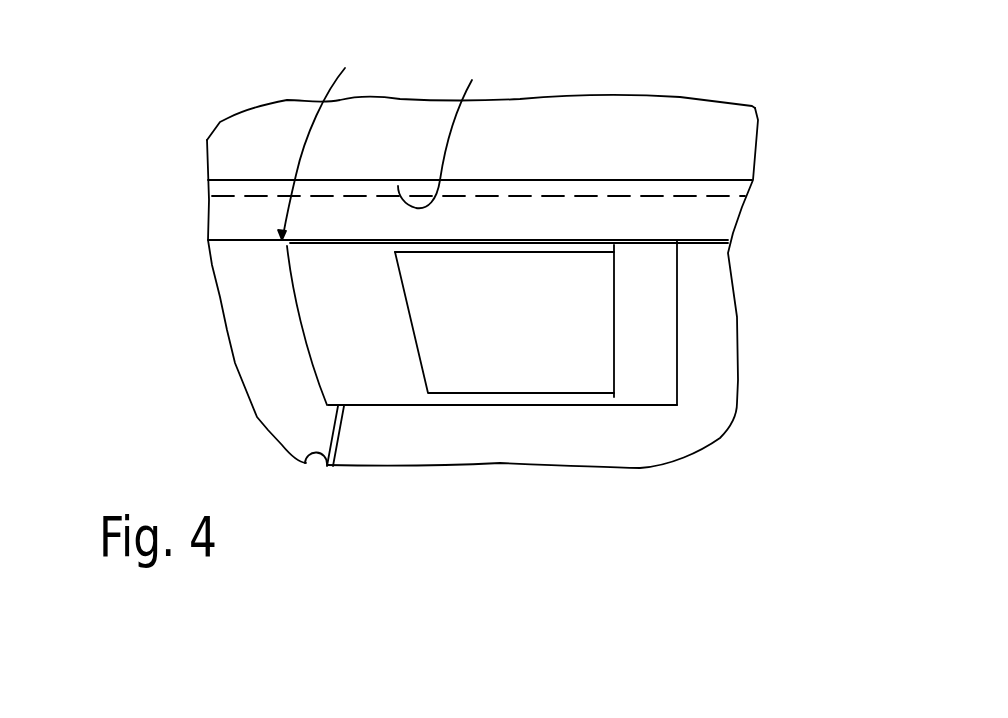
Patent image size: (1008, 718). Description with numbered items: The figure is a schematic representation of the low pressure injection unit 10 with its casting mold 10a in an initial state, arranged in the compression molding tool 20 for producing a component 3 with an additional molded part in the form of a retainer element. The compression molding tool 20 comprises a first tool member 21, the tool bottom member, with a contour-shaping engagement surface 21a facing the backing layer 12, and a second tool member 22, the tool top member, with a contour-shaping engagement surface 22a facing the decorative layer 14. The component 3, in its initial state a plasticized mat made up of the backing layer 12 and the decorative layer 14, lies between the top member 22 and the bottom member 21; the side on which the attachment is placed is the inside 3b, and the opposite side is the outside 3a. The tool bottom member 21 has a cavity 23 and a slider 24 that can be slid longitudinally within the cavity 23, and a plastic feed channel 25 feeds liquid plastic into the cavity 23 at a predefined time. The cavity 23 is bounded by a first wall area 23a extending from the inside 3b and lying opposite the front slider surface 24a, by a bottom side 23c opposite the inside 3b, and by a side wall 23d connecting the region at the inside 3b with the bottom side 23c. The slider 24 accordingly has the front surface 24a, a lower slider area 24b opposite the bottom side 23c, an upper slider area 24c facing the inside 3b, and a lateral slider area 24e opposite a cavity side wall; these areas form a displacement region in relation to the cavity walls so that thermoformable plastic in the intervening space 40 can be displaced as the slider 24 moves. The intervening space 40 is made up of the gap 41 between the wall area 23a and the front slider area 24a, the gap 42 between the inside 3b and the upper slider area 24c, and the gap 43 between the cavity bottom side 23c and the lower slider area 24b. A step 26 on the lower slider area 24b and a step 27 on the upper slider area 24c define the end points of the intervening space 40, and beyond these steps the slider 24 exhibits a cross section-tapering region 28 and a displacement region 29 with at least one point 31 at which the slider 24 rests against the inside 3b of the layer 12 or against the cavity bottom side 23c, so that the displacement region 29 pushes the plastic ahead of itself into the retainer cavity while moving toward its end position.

The component 3 is at (762, 204).
The outside 3a is at (701, 181).
The inside 3b is at (226, 243).
The low pressure injection unit 10 is at (440, 432).
The casting mold 10a is at (292, 532).
The backing layer 12 is at (726, 228).
The decorative layer 14 is at (738, 187).
The compression molding tool 20 is at (150, 204).
The first tool member 21 is at (720, 420).
The first contour-shaping engagement surface 21a is at (331, 220).
The second tool member 22 is at (668, 106).
The second contour-shaping engagement surface 22a is at (453, 129).
The cavity 23 is at (383, 383).
The first wall area 23a is at (297, 298).
The bottom side 23c is at (550, 408).
The side wall 23d is at (308, 263).
The slider 24 is at (607, 335).
The front slider surface 24a is at (423, 370).
The lower slider area 24b is at (523, 396).
The upper slider area 24c is at (560, 253).
The lateral slider area 24e is at (452, 288).
The feed channel 25 is at (305, 458).
The step 26 is at (631, 412).
The step 27 is at (630, 248).
The cross section-tapering region 28 is at (610, 417).
The displacement region 29 is at (672, 424).
The point 31 is at (615, 243).
The intervening space 40 is at (348, 335).
The gap 41 is at (347, 352).
The gap 42 is at (498, 244).
The gap 43 is at (483, 400).